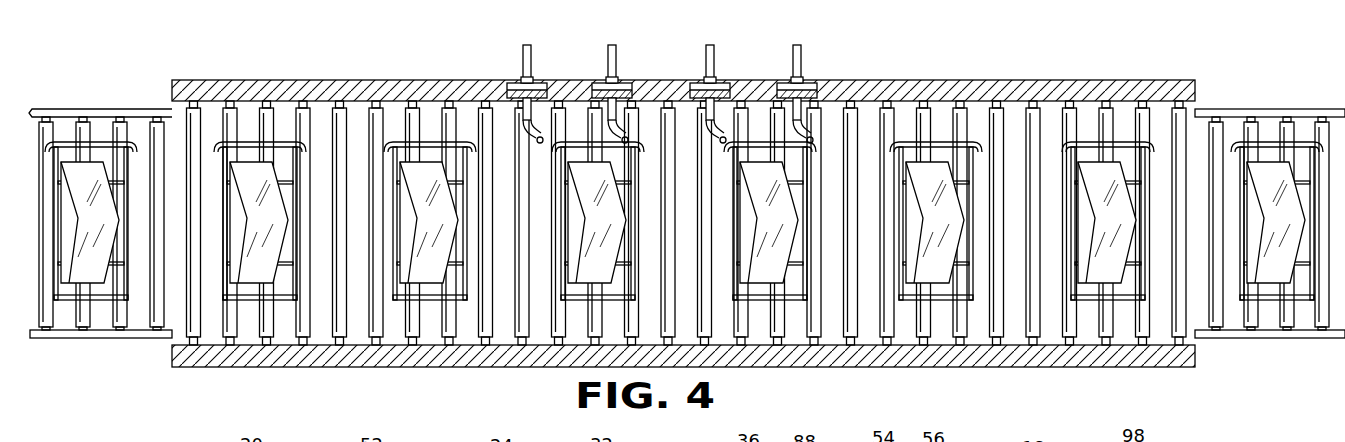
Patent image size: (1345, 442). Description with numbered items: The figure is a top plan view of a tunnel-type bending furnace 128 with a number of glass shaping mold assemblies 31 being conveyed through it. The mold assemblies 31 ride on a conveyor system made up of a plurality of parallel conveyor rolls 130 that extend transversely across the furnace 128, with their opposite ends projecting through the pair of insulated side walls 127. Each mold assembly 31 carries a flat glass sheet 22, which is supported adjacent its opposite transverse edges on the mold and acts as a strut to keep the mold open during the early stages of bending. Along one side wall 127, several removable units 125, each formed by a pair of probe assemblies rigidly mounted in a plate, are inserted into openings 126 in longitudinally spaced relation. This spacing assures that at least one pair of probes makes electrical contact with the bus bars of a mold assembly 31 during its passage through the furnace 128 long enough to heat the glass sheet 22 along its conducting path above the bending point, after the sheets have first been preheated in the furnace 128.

The glass sheet 22 is at (76, 268).
The mold assembly 31 is at (213, 140).
The removable unit 125 is at (601, 75).
The opening 126 is at (509, 83).
The insulated side wall 127 is at (905, 86).
The tunnel-type bending furnace 128 is at (684, 226).
The conveyor roll 130 is at (413, 116).